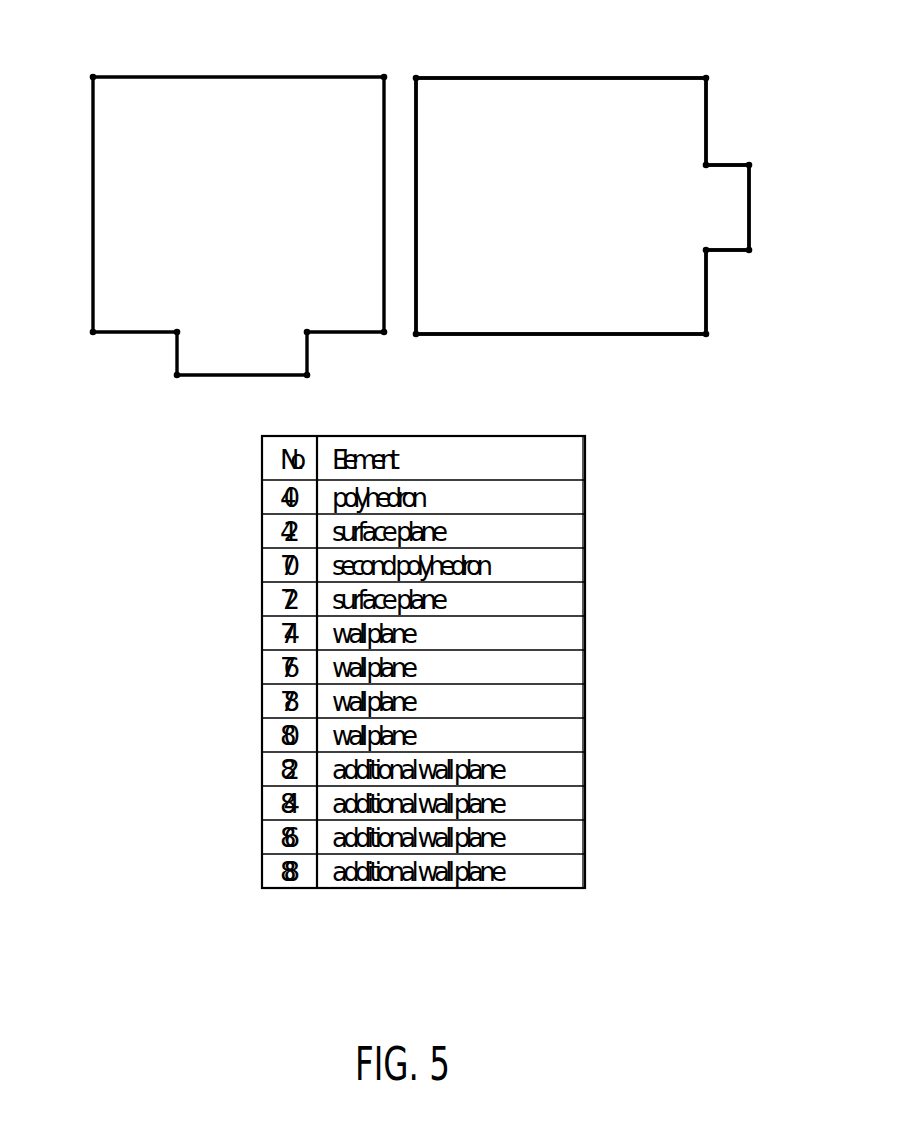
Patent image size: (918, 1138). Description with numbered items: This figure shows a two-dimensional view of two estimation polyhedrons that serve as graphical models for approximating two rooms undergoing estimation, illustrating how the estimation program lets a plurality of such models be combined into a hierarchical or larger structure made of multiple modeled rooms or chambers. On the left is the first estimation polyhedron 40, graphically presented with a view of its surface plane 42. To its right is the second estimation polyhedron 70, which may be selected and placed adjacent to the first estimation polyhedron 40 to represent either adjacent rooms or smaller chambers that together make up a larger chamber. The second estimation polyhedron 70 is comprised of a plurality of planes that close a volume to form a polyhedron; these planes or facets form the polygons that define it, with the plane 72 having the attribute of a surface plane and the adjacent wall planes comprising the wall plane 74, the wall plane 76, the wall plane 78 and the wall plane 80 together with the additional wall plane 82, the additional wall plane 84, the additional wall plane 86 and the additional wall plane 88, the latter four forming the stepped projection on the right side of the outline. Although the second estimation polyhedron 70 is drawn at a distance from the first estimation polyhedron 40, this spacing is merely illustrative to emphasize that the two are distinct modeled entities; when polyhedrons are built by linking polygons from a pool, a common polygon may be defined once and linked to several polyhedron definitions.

The first estimation polyhedron 40 is at (247, 62).
The surface plane 42 is at (256, 222).
The second estimation polyhedron 70 is at (593, 62).
The surface plane 72 is at (567, 225).
The wall plane 74 is at (462, 77).
The wall plane 76 is at (417, 133).
The wall plane 78 is at (623, 335).
The wall plane 80 is at (708, 315).
The additional wall plane 82 is at (732, 251).
The additional wall plane 84 is at (752, 223).
The additional wall plane 86 is at (725, 163).
The additional wall plane 88 is at (708, 103).